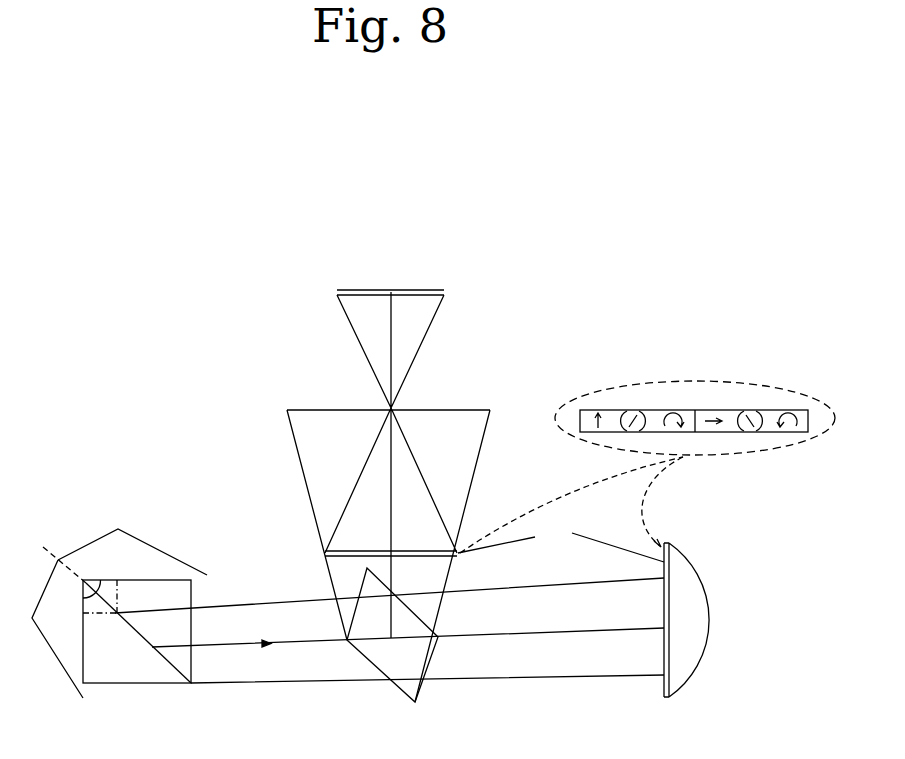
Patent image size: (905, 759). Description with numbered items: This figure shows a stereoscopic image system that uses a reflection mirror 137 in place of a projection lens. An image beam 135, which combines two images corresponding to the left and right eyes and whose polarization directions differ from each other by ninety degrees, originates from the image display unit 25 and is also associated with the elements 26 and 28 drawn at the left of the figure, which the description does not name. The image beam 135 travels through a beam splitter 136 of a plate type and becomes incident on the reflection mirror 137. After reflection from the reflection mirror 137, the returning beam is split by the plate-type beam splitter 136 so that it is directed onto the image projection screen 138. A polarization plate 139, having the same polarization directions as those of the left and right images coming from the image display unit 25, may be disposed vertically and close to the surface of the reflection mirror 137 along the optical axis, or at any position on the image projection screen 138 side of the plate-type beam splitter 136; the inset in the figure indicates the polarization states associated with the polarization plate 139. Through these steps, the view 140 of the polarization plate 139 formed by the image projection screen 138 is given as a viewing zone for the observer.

The image display unit 25 is at (129, 526).
The mirror 26 is at (57, 629).
The beam splitter 28 is at (117, 615).
The image beam 135 is at (389, 630).
The beam splitter 136 is at (392, 647).
The reflection mirror 137 is at (703, 620).
The image projection screen 138 is at (404, 549).
The polarization plate 139 is at (646, 471).
The view 140 is at (409, 337).